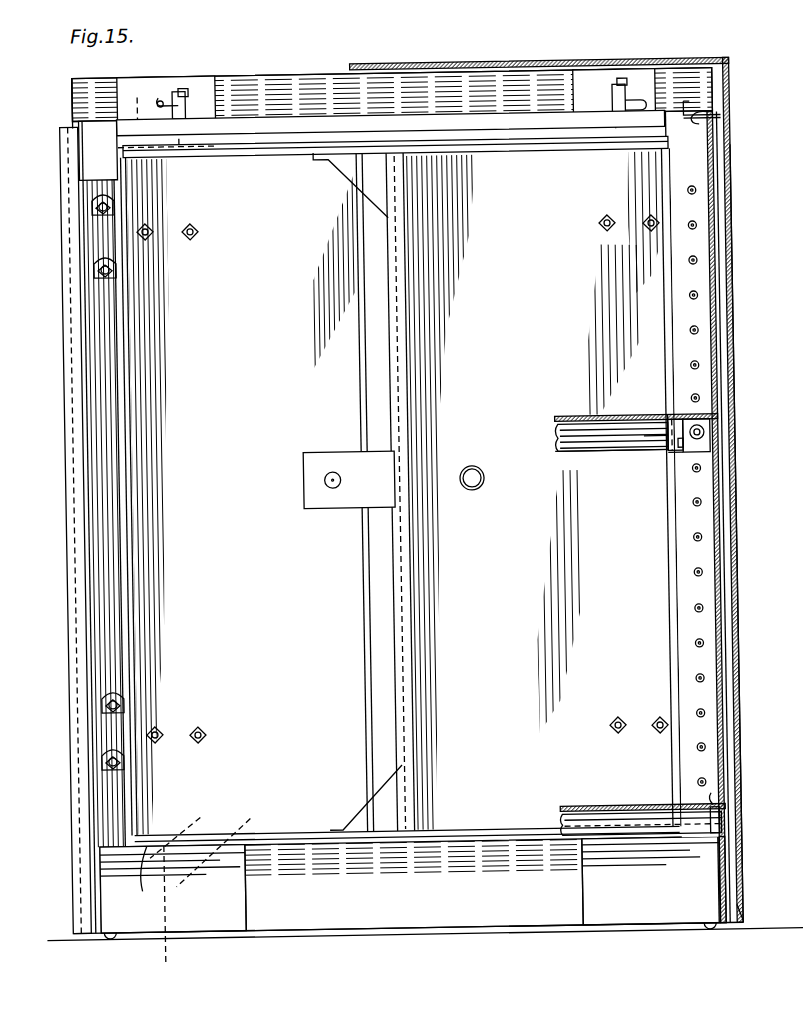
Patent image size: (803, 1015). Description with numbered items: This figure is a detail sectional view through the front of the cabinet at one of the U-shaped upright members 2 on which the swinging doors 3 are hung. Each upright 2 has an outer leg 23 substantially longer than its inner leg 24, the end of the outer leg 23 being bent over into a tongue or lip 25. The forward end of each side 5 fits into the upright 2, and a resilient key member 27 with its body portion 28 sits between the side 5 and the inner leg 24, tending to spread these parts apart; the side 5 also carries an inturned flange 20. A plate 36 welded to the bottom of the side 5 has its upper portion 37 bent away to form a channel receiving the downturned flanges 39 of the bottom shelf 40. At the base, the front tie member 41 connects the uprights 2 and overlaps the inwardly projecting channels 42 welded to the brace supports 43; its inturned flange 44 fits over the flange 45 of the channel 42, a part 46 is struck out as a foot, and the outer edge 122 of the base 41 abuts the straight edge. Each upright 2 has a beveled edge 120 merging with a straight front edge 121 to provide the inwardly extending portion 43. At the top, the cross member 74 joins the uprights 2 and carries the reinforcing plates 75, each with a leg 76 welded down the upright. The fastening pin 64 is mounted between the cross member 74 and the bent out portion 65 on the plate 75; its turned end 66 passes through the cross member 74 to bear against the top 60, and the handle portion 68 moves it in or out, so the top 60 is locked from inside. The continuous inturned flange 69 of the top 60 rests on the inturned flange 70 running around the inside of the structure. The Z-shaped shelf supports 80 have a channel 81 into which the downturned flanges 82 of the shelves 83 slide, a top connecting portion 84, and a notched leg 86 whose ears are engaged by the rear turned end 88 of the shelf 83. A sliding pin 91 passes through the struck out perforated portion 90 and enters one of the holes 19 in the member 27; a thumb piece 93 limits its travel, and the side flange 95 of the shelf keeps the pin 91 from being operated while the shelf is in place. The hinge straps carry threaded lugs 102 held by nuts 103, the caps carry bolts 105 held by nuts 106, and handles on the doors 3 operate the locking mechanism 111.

The U-shaped upright member 2 is at (738, 223).
The swinging door 3 is at (401, 494).
The side 5 is at (720, 632).
The hole 19 is at (702, 335).
The inturned flange 20 is at (733, 923).
The outer leg 23 is at (71, 300).
The inner leg 24 is at (120, 346).
The tongue or lip 25 is at (75, 334).
The resilient key member 27 is at (704, 251).
The body portion 28 is at (689, 315).
The plate 36 is at (712, 877).
The upper portion 37 is at (708, 807).
The downturned leg or flange 39 is at (714, 821).
The bottom shelf 40 is at (560, 810).
The front tie member or base 41 is at (455, 930).
The inwardly projecting channel 42 is at (233, 897).
The brace support 43 is at (169, 914).
The inturned flange 44 is at (350, 931).
The flange 45 is at (183, 921).
The struck out part 46 is at (104, 935).
The top 60 is at (555, 65).
The fastening pin 64 is at (187, 89).
The bent out portion 65 is at (177, 98).
The turned end 66 is at (618, 126).
The handle portion 68 is at (197, 90).
The continuous inturned flange 69 is at (707, 118).
The inturned flange 70 is at (718, 132).
The cross member 74 is at (392, 95).
The reinforcing plate 75 is at (221, 95).
The leg 76 is at (86, 153).
The shelf support 80 is at (670, 457).
The channel 81 is at (670, 401).
The downturned leg or flange 82 is at (600, 455).
The shelf 83 is at (626, 406).
The top connecting portion 84 is at (711, 426).
The leg 86 is at (648, 456).
The rear turned end 88 is at (565, 456).
The struck out perforated portion 90 is at (676, 459).
The sliding pin 91 is at (685, 448).
The thumb piece 93 is at (706, 440).
The side flange 95 is at (664, 428).
The threaded lug 102 is at (154, 234).
The nut 103 is at (198, 229).
The lug or bolt 105 is at (112, 267).
The nut 106 is at (114, 276).
The locking mechanism 111 is at (313, 453).
The beveled edge 120 is at (196, 829).
The straight front edge 121 is at (239, 842).
The outer edge 122 is at (151, 931).